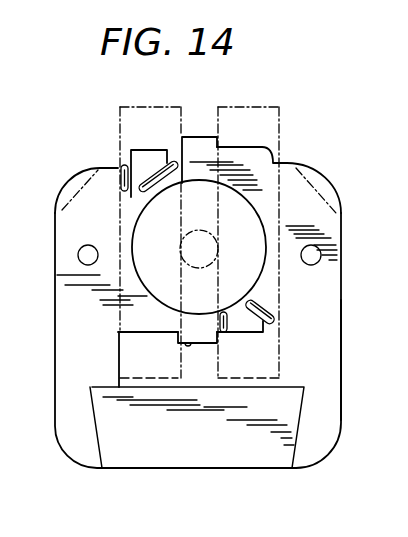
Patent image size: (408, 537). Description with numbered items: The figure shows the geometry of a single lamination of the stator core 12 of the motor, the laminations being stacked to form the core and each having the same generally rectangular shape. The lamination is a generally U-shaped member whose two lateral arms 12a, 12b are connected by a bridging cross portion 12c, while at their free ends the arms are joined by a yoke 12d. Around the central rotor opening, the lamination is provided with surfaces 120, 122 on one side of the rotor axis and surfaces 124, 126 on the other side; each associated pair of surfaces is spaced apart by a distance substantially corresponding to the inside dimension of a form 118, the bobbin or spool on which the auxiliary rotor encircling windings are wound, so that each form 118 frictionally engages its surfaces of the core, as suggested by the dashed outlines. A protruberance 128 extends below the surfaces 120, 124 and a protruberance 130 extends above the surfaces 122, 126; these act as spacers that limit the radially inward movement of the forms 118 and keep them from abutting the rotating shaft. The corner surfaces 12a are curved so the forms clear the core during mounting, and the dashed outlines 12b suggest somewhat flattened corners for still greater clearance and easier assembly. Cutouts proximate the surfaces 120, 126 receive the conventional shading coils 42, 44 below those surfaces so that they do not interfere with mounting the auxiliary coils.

The stator core 12 is at (343, 288).
The arm 12a is at (73, 178).
The arm 12b is at (70, 196).
The cross portion 12c is at (328, 360).
The yoke 12d is at (68, 283).
The shading coil 42 is at (130, 196).
The shading coil 44 is at (222, 336).
The form 118 is at (129, 106).
The surface 120 is at (224, 348).
The surface 122 is at (237, 146).
The surface 124 is at (155, 332).
The surface 126 is at (140, 148).
The protruberance 128 is at (181, 330).
The protruberance 130 is at (200, 136).